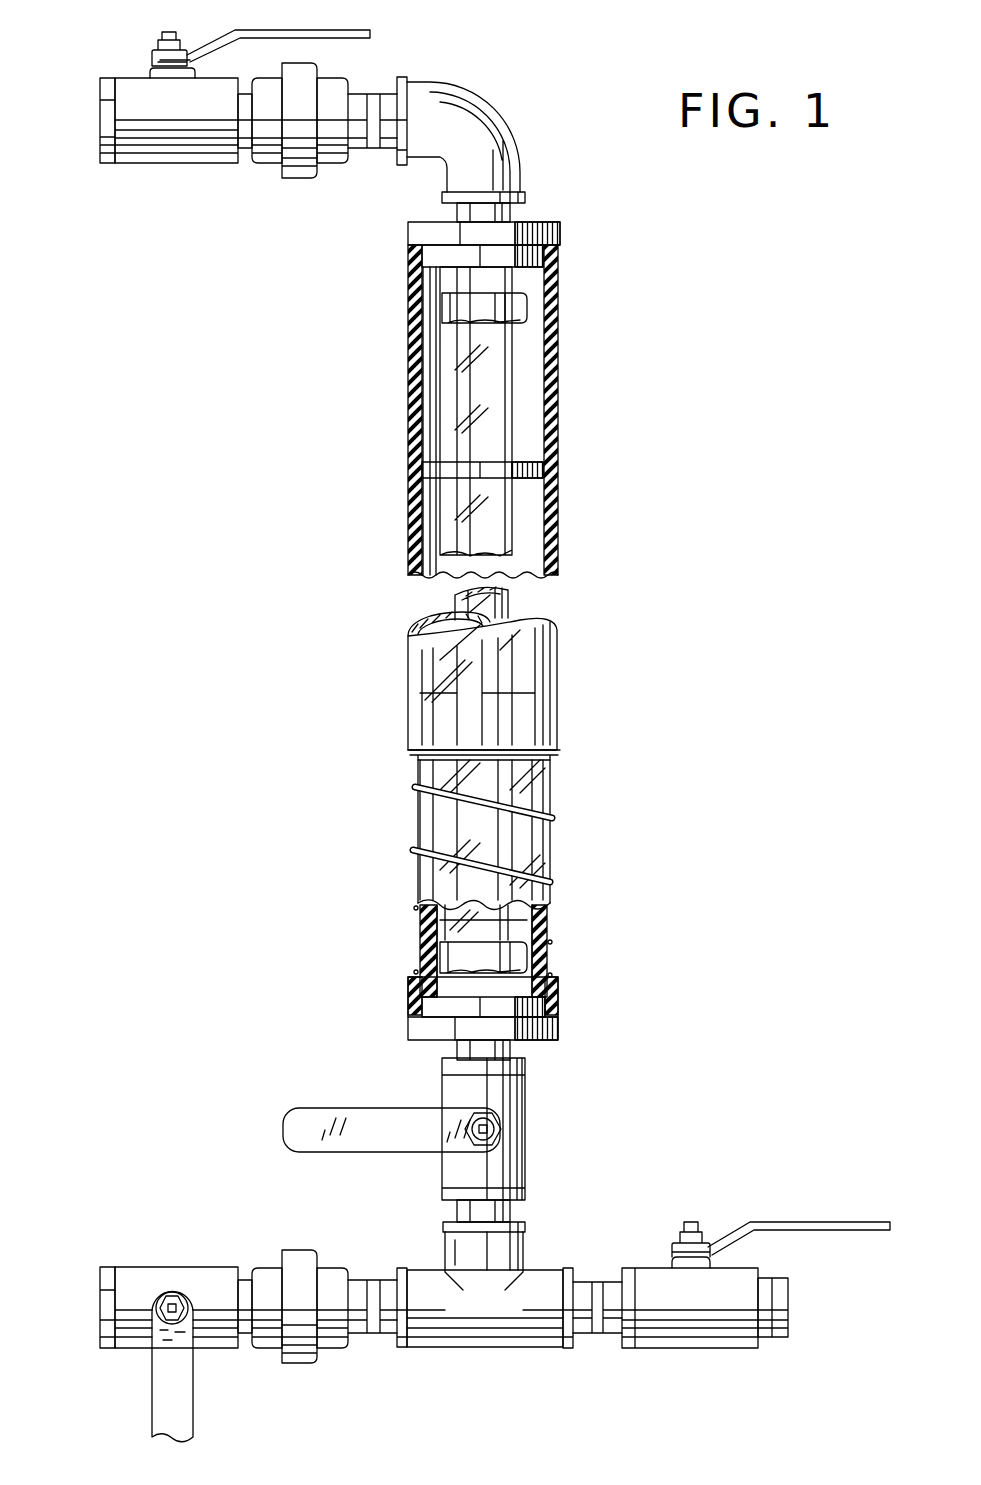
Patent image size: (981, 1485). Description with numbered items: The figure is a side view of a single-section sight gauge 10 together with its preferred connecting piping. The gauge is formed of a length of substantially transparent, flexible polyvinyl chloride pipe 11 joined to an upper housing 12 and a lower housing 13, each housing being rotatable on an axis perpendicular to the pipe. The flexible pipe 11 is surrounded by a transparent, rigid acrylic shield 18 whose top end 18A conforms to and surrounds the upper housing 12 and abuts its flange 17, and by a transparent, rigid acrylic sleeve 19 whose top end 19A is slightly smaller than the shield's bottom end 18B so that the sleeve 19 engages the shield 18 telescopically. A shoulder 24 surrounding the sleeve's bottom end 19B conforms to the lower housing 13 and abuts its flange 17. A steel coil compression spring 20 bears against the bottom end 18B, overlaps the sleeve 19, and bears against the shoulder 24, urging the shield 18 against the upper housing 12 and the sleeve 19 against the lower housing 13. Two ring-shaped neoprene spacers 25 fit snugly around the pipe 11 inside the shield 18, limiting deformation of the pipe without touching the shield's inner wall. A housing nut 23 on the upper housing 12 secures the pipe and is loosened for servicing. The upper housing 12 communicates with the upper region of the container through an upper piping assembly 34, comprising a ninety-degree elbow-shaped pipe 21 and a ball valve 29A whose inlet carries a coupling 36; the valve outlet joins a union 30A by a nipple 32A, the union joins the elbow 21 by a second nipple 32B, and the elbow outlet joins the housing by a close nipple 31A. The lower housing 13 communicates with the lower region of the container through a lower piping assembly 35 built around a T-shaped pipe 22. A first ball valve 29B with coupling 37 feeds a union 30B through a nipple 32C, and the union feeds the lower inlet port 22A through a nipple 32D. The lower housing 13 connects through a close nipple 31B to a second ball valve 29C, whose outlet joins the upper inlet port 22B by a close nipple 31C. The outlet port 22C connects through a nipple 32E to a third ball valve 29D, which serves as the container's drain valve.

The sight gauge 10 is at (625, 524).
The flexible pipe 11 is at (513, 400).
The upper housing 12 is at (558, 222).
The lower housing 13 is at (430, 1005).
The flange 17 is at (560, 237).
The shield 18 is at (557, 343).
The top end of shield 18A is at (410, 237).
The bottom end of shield 18B is at (410, 757).
The sleeve 19 is at (548, 787).
The top end of sleeve 19A is at (440, 692).
The bottom end of sleeve 19B is at (415, 1020).
The compression spring 20 is at (552, 882).
The elbow-shaped pipe 21 is at (493, 102).
The T-shaped pipe 22 is at (487, 1347).
The lower inlet port 22A is at (403, 1268).
The upper inlet port 22B is at (525, 1228).
The outlet port 22C is at (567, 1348).
The housing nut 23 is at (448, 315).
The shoulder 24 is at (560, 997).
The spacer 25 is at (523, 462).
The ball valve 29A is at (167, 165).
The first ball valve 29B is at (177, 1265).
The second ball valve 29C is at (523, 1132).
The third ball valve 29D is at (693, 1350).
The union 30A is at (295, 177).
The union 30B is at (298, 1250).
The close nipple 31A is at (512, 208).
The close nipple 31B is at (510, 1050).
The close nipple 31C is at (515, 1210).
The nipple 32A is at (258, 162).
The nipple 32B is at (335, 165).
The nipple 32C is at (260, 1352).
The nipple 32D is at (342, 1350).
The nipple 32E is at (597, 1333).
The upper piping assembly 34 is at (357, 70).
The lower piping assembly 35 is at (433, 1350).
The coupling 36 is at (95, 158).
The coupling 37 is at (95, 1352).